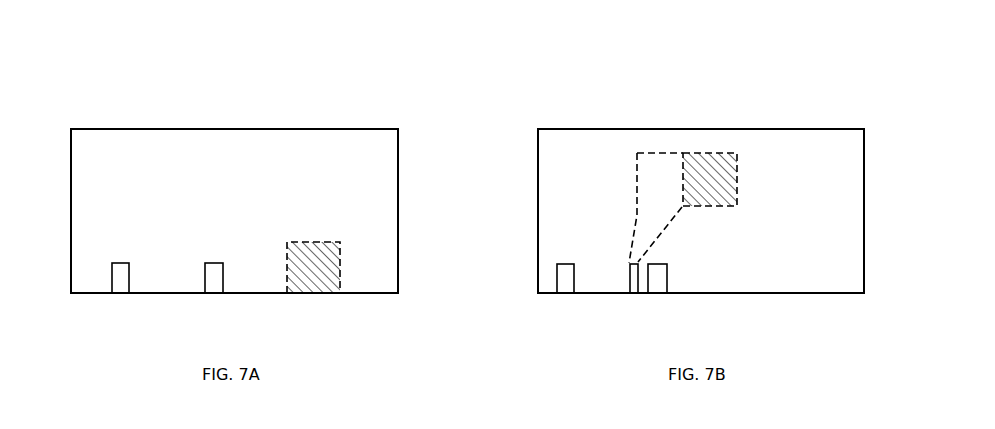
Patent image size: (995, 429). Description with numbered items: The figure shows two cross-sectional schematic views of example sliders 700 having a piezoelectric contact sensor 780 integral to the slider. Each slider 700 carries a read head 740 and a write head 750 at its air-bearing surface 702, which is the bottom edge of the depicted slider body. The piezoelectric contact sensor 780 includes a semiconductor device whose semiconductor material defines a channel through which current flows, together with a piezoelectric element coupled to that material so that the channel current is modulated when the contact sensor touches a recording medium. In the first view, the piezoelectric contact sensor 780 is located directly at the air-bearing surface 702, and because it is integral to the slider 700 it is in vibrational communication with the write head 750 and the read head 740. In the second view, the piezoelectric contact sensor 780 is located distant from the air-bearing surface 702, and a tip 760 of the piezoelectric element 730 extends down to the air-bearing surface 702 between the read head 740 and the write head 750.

In FIG. 7A, the slider 700 is at (223, 129).
In FIG. 7B, the slider 700 is at (632, 129).
In FIG. 7A, the air-bearing surface 702 is at (535, 293).
In FIG. 7B, the piezoelectric element 730 is at (658, 192).
In FIG. 7A, the read head 740 is at (124, 293).
In FIG. 7B, the read head 740 is at (563, 293).
In FIG. 7A, the write head 750 is at (222, 293).
In FIG. 7B, the write head 750 is at (653, 293).
In FIG. 7B, the tip 760 is at (632, 293).
In FIG. 7A, the piezoelectric contact sensor 780 is at (327, 260).
In FIG. 7B, the piezoelectric contact sensor 780 is at (716, 180).